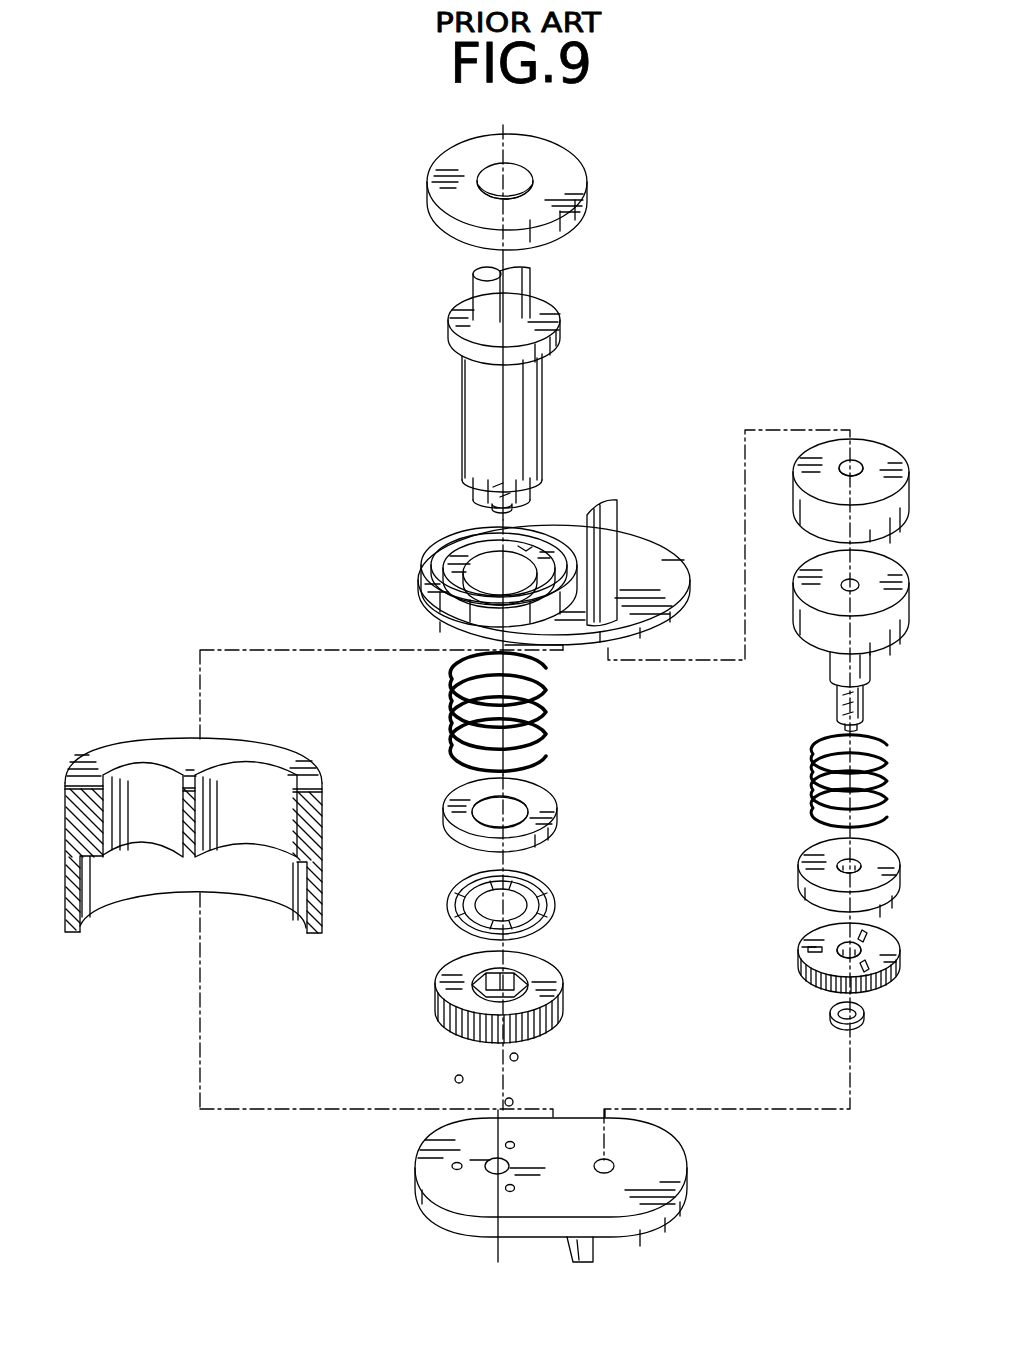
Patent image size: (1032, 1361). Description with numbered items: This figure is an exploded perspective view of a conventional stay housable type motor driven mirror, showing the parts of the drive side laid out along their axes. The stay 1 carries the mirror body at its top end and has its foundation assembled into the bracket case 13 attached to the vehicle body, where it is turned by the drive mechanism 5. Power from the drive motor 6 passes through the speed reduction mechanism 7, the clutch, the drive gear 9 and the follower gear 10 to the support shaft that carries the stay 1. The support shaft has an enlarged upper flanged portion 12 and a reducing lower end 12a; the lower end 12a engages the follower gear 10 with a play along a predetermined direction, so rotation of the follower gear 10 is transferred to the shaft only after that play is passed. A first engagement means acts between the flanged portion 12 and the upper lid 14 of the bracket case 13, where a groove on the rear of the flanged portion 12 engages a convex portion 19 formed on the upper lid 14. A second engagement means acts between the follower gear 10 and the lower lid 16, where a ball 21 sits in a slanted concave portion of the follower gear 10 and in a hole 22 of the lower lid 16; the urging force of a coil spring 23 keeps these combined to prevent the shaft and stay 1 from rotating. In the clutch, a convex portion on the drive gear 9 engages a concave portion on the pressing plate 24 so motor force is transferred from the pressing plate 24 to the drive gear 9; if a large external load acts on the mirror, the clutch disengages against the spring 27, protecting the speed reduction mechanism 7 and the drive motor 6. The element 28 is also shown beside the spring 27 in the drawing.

The stay 1 is at (530, 286).
The flanged portion 12 is at (534, 383).
The reducing lower end 12a is at (531, 488).
The upper lid 14 is at (562, 567).
The convex portion 19 is at (524, 548).
The coil spring 23 is at (458, 682).
The bracket case 13 is at (292, 760).
The follower gear 10 is at (555, 981).
The ball 21 is at (520, 1057).
The hole 22 is at (515, 1145).
The lower lid 16 is at (524, 1169).
The drive mechanism 5 is at (830, 548).
The drive motor 6 is at (806, 508).
The speed reduction mechanism 7 is at (808, 621).
The spring 27 is at (815, 758).
The spring 28 is at (793, 781).
The pressing plate 24 is at (800, 866).
The drive gear 9 is at (800, 952).